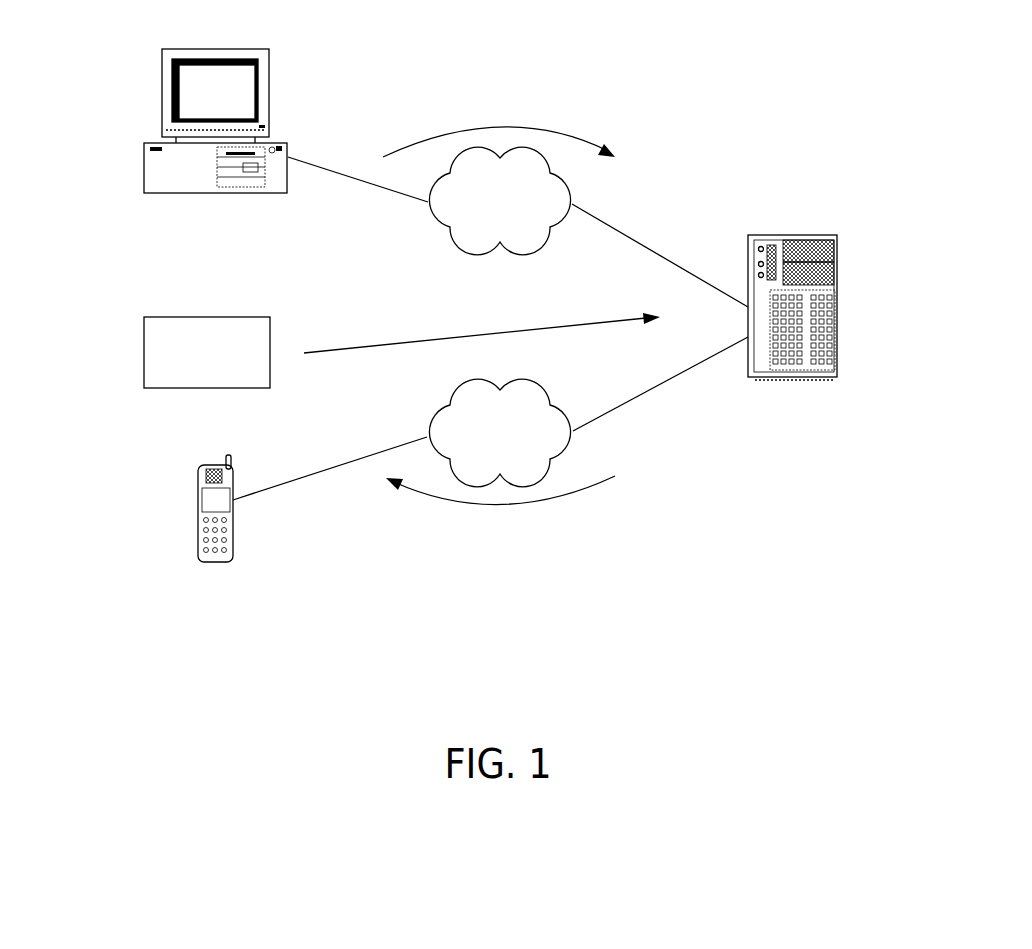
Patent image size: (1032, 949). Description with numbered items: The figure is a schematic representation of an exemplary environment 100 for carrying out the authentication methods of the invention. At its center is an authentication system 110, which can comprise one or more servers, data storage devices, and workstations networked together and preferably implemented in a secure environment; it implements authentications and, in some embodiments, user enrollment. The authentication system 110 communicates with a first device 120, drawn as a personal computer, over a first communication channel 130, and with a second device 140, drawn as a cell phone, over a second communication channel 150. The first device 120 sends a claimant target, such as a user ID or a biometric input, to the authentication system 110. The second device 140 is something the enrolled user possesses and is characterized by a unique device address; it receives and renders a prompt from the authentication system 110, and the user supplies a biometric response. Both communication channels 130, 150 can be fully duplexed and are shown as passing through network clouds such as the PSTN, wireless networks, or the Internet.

The environment 100 is at (754, 71).
The authentication system 110 is at (795, 235).
The first device 120 is at (162, 113).
The first communication channel 130 is at (603, 220).
The second device 140 is at (198, 483).
The second communication channel 150 is at (598, 418).